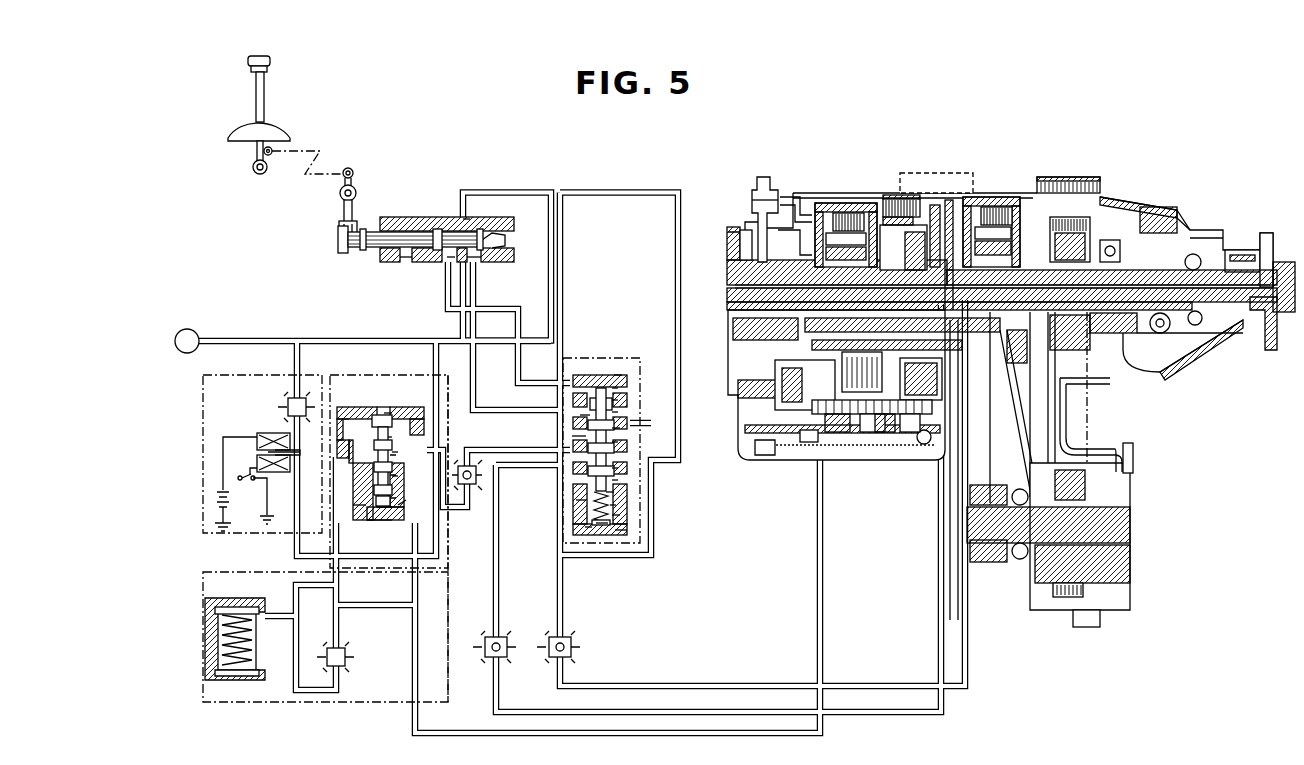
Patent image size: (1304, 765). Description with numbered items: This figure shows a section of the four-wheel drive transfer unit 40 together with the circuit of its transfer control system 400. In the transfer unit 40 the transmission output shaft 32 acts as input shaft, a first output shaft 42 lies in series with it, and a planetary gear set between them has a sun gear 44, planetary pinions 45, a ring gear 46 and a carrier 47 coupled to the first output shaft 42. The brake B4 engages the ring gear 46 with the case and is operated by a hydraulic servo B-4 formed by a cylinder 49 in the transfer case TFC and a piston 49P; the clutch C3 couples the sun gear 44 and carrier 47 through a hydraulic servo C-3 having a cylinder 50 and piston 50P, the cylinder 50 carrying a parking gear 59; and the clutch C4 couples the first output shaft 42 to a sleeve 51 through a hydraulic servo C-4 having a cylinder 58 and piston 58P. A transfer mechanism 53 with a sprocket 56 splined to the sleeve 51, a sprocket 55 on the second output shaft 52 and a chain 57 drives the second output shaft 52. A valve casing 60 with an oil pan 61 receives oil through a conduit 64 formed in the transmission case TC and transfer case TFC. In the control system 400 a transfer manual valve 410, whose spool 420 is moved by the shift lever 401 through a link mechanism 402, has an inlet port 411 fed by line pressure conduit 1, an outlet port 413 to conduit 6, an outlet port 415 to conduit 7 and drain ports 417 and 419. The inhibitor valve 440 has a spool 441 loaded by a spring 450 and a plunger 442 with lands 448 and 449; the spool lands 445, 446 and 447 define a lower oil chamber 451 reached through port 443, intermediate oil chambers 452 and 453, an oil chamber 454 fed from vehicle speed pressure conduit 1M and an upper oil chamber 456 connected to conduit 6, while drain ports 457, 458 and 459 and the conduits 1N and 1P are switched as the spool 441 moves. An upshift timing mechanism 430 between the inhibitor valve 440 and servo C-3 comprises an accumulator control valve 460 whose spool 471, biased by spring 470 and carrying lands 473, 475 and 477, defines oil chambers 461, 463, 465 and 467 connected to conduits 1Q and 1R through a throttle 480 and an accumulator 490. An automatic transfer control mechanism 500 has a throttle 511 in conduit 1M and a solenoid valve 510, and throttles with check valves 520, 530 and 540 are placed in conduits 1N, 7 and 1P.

The conduit 1 is at (502, 190).
The conduit 6 is at (448, 312).
The conduit 7 is at (475, 285).
The output shaft 32 is at (752, 180).
The transfer unit 40 is at (964, 160).
The first output shaft 42 is at (1140, 268).
The sun gear 44 is at (876, 230).
The planetary pinions 45 is at (872, 420).
The ring gear 46 is at (882, 430).
The carrier 47 is at (835, 440).
The cylinder 49 is at (920, 198).
The piston 49P is at (935, 200).
The cylinder 50 is at (810, 205).
The piston 50P is at (855, 214).
The 4-wheel drive sleeve 51 is at (1108, 240).
The second output shaft 52 is at (1010, 555).
The transfer mechanism 53 is at (1137, 455).
The sprocket 55 is at (1118, 565).
The sprocket 56 is at (1085, 177).
The chain 57 is at (1110, 408).
The cylinder 58 is at (1000, 197).
The piston 58P is at (1015, 230).
The parking gear 59 is at (810, 440).
The valve casing 60 is at (915, 445).
The oil pan 61 is at (785, 462).
The conduit 64 is at (765, 455).
The transfer control system 400 is at (560, 185).
The shift lever 401 is at (268, 70).
The link mechanism 402 is at (352, 170).
The transfer manual valve 410 is at (410, 212).
The inlet port 411 is at (470, 222).
The outlet port 413 is at (450, 264).
The outlet port 415 is at (500, 250).
The drain port 417 is at (433, 262).
The drain port 419 is at (500, 259).
The spool 420 is at (362, 272).
The upshift timing mechanism 430 is at (368, 372).
The inhibitor valve 440 is at (600, 345).
The spool 441 is at (618, 442).
The plunger 442 is at (616, 400).
The port 443 is at (618, 515).
The sleeve-like land 445 is at (588, 535).
The intermediate land 446 is at (616, 480).
The upper land 447 is at (620, 428).
The lower land 448 is at (618, 412).
The upper land 449 is at (618, 388).
The spring 450 is at (604, 530).
The lower oil chamber 451 is at (625, 530).
The first intermediate oil chamber 452 is at (612, 492).
The second intermediate oil chamber 453 is at (618, 468).
The oil chamber 454 is at (580, 418).
The upper oil chamber 456 is at (622, 375).
The drain port 457 is at (572, 438).
The drain port 458 is at (614, 505).
The drain port 459 is at (578, 505).
The accumulator control valve 460 is at (398, 385).
The lower oil chamber 461 is at (376, 522).
The lower intermediate oil chamber 463 is at (396, 453).
The upper intermediate oil chamber 465 is at (372, 422).
The upper oil chamber 467 is at (398, 392).
The biasing spring 470 is at (388, 508).
The spool 471 is at (365, 505).
The lower land 473 is at (396, 476).
The intermediate land 475 is at (390, 437).
The upper land 477 is at (390, 413).
The throttle 480 is at (352, 673).
The accumulator 490 is at (240, 600).
The automatic transfer control mechanism 500 is at (262, 374).
The electromagnetic solenoid valve 510 is at (253, 430).
The throttle 511 is at (286, 398).
The throttle with check valve 520 is at (505, 632).
The throttle with check valve 530 is at (565, 634).
The throttle with check valve 540 is at (478, 488).
The conduit 1M is at (294, 552).
The reducing conduit 1N is at (506, 468).
The lock-up conduit 1P is at (510, 452).
The conduit 1Q is at (622, 745).
The conduit 1R is at (418, 515).
The transmission case TC is at (732, 225).
The clutch C3 is at (847, 210).
The hydraulic servo C-3 is at (812, 215).
The clutch C4 is at (1012, 206).
The hydraulic servo C-4 is at (985, 197).
The brake B4 is at (898, 196).
The hydraulic servo B-4 is at (950, 190).
The transfer case TFC is at (818, 207).